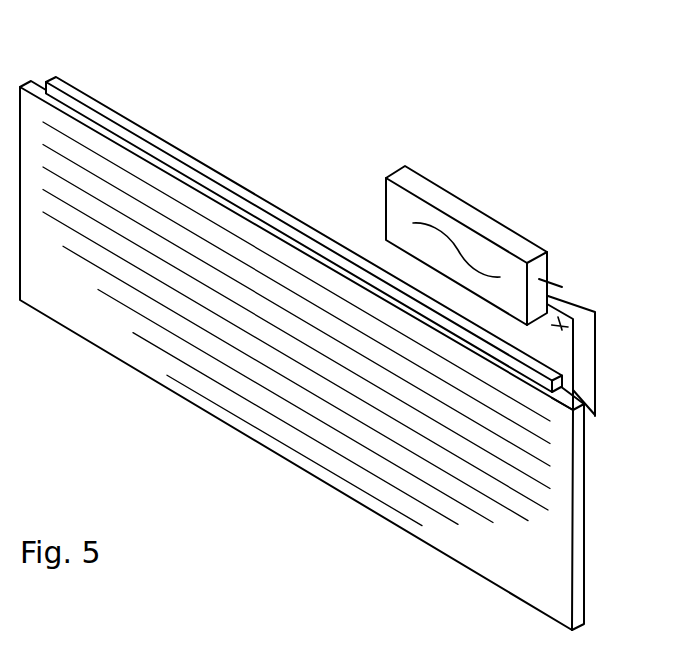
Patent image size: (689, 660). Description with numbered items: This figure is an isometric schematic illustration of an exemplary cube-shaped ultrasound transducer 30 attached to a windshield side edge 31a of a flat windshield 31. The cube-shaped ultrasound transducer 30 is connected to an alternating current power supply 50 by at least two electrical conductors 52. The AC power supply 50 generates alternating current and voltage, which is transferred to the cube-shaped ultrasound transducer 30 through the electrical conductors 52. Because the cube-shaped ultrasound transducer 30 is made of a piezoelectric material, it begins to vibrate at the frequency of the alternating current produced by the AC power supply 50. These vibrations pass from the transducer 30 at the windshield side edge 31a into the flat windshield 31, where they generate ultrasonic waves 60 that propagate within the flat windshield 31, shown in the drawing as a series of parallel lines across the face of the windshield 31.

The cube-shaped ultrasound transducer 30 is at (345, 275).
The flat windshield 31 is at (97, 321).
The windshield side edge 31a is at (21, 63).
The alternating current (AC) power supply 50 is at (490, 257).
The electrical conductors 52 is at (573, 297).
The ultrasonic waves 60 is at (293, 432).